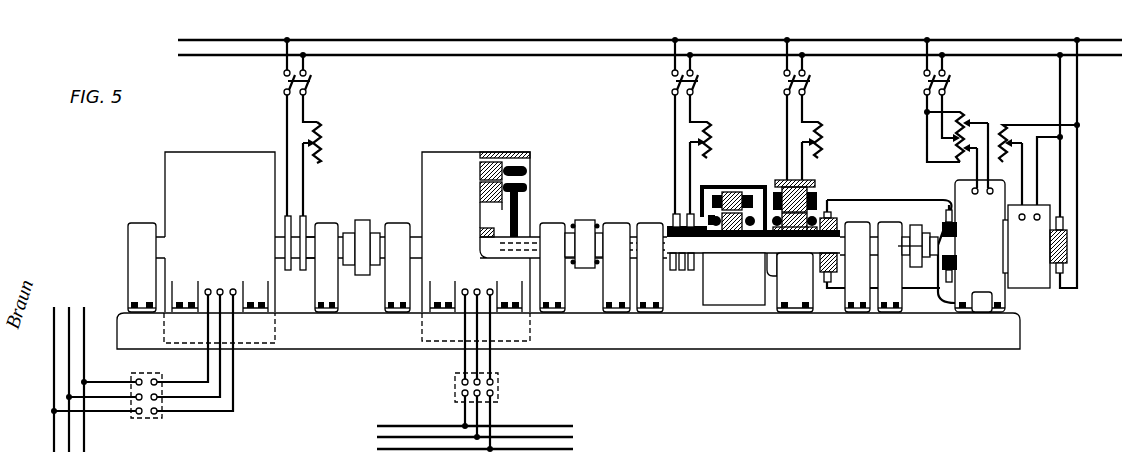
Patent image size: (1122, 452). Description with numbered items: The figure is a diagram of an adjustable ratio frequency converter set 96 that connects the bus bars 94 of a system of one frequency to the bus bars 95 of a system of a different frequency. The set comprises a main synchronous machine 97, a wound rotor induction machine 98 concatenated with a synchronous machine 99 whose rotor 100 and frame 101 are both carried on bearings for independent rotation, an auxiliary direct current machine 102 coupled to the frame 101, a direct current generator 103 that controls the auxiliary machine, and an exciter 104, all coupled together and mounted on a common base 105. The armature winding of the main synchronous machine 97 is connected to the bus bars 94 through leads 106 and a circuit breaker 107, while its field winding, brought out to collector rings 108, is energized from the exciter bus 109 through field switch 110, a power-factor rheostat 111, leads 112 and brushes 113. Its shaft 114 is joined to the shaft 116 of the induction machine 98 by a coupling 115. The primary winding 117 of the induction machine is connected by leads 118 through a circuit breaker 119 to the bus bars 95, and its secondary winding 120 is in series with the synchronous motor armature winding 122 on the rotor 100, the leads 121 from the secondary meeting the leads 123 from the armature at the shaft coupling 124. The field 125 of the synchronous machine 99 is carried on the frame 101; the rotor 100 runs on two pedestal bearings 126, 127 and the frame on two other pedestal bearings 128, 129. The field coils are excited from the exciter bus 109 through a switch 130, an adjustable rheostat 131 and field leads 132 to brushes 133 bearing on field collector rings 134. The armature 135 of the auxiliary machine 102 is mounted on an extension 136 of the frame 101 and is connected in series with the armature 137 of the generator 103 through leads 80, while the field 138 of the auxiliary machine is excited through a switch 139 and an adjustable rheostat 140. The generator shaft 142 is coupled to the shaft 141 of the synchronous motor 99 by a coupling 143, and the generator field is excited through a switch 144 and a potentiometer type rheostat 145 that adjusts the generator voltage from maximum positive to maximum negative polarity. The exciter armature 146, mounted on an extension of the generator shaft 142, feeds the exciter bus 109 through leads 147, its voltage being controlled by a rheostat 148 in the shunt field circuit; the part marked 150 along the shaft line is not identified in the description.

The brake circuit conductors 80 is at (855, 200).
The bus bars 94 is at (90, 379).
The bus bars 95 is at (550, 449).
The frequency converter set 96 is at (725, 370).
The main synchronous machine 97 is at (170, 147).
The wound rotor induction machine 98 is at (440, 148).
The synchronous machine 99 is at (732, 178).
The rotor 100 is at (728, 250).
The frame 101 is at (740, 190).
The auxiliary D. C. machine 102 is at (812, 180).
The direct current generator 103 is at (942, 186).
The exciter 104 is at (1072, 218).
The common base 105 is at (1010, 327).
The leads 106 is at (222, 380).
The circuit breaker 107 is at (163, 418).
The collector rings 108 is at (303, 272).
The exciter bus 109 is at (530, 56).
The field switch 110 is at (311, 81).
The rheostat 111 is at (325, 136).
The leads 112 is at (288, 178).
The brushes 113 is at (303, 216).
The shaft 114 is at (343, 237).
The coupling 115 is at (362, 230).
The shaft 116 is at (417, 238).
The primary winding 117 is at (527, 170).
The leads 118 is at (480, 358).
The circuit breaker 119 is at (499, 385).
The secondary winding 120 is at (527, 186).
The leads 121 is at (518, 208).
The synchronous motor armature winding 122 is at (690, 212).
The leads 123 is at (617, 250).
The shaft coupling 124 is at (572, 224).
The field 125 is at (676, 212).
The pedestal bearing 126 is at (617, 222).
The pedestal bearing 127 is at (890, 226).
The pedestal bearing 128 is at (662, 222).
The pedestal bearing 129 is at (858, 226).
The switch 130 is at (699, 82).
The adjustable rheostat 131 is at (712, 130).
The field leads 132 is at (675, 165).
The brushes 133 is at (672, 224).
The field collector rings 134 is at (689, 272).
The armature 135 is at (822, 212).
The extension 136 is at (773, 240).
The armature 137 is at (942, 222).
The field 138 is at (815, 188).
The switch 139 is at (811, 82).
The adjustable rheostat 140 is at (824, 137).
The shaft 141 is at (912, 250).
The shaft 142 is at (910, 243).
The coupling 143 is at (918, 226).
The switch 144 is at (951, 81).
The potentiometer type rheostat 145 is at (955, 142).
The armature 146 is at (1068, 243).
The leads 147 is at (1078, 175).
The rheostat 148 is at (1017, 143).
The shaft 150 is at (630, 262).